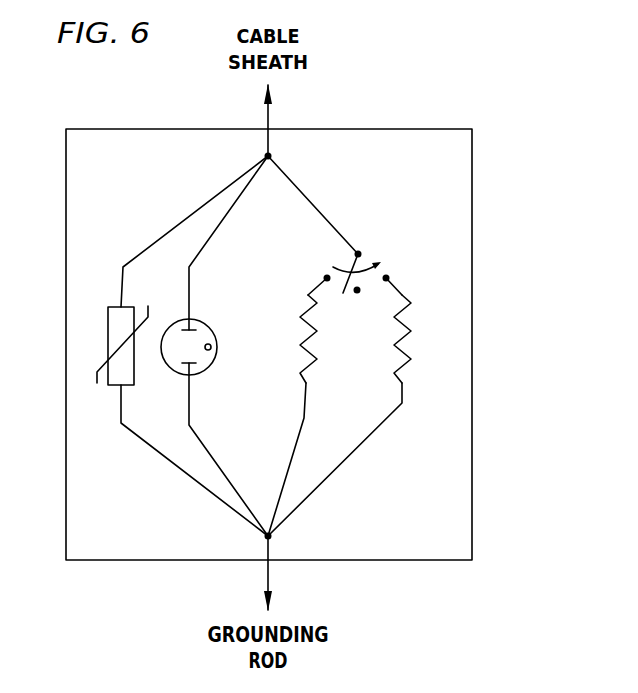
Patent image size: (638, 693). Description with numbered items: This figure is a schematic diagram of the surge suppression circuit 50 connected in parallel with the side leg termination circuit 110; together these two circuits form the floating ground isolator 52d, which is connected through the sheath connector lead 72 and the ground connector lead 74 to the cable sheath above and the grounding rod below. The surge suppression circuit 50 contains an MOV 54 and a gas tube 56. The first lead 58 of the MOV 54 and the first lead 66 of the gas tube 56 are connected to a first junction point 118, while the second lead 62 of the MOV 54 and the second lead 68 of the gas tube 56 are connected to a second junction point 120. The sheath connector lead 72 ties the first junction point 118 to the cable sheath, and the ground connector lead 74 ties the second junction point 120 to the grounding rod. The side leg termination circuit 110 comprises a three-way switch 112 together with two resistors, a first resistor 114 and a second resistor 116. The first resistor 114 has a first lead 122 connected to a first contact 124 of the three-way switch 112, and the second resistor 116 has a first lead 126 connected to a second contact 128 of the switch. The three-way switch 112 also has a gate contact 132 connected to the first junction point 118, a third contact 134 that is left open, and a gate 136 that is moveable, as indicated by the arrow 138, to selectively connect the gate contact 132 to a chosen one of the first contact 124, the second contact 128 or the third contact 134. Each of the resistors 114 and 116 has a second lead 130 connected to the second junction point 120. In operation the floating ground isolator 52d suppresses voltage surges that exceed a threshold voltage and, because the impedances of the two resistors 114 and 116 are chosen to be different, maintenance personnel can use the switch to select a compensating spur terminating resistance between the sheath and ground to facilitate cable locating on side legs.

The surge suppression circuit 50 is at (147, 530).
The floating ground isolator 52d is at (472, 204).
The MOV 54 is at (115, 325).
The gas tube 56 is at (217, 353).
The first lead of the MOV 58 is at (188, 218).
The second lead of the MOV 62 is at (170, 465).
The first lead of the gas tube 66 is at (222, 227).
The second lead of the gas tube 68 is at (207, 450).
The sheath connector lead 72 is at (266, 142).
The ground connector lead 74 is at (270, 552).
The side leg termination circuit 110 is at (392, 396).
The three-way switch 112 is at (361, 254).
The first resistor 114 is at (312, 360).
The second resistor 116 is at (412, 363).
The first junction point 118 is at (272, 154).
The second junction point 120 is at (262, 542).
The first lead of the first resistor 122 is at (307, 297).
The first contact 124 is at (326, 277).
The first lead of the second resistor 126 is at (405, 295).
The second contact 128 is at (387, 277).
The second lead 130 is at (292, 462).
The gate contact 132 is at (360, 251).
The third contact 134 is at (360, 294).
The gate 136 is at (357, 290).
The arrow 138 is at (341, 264).